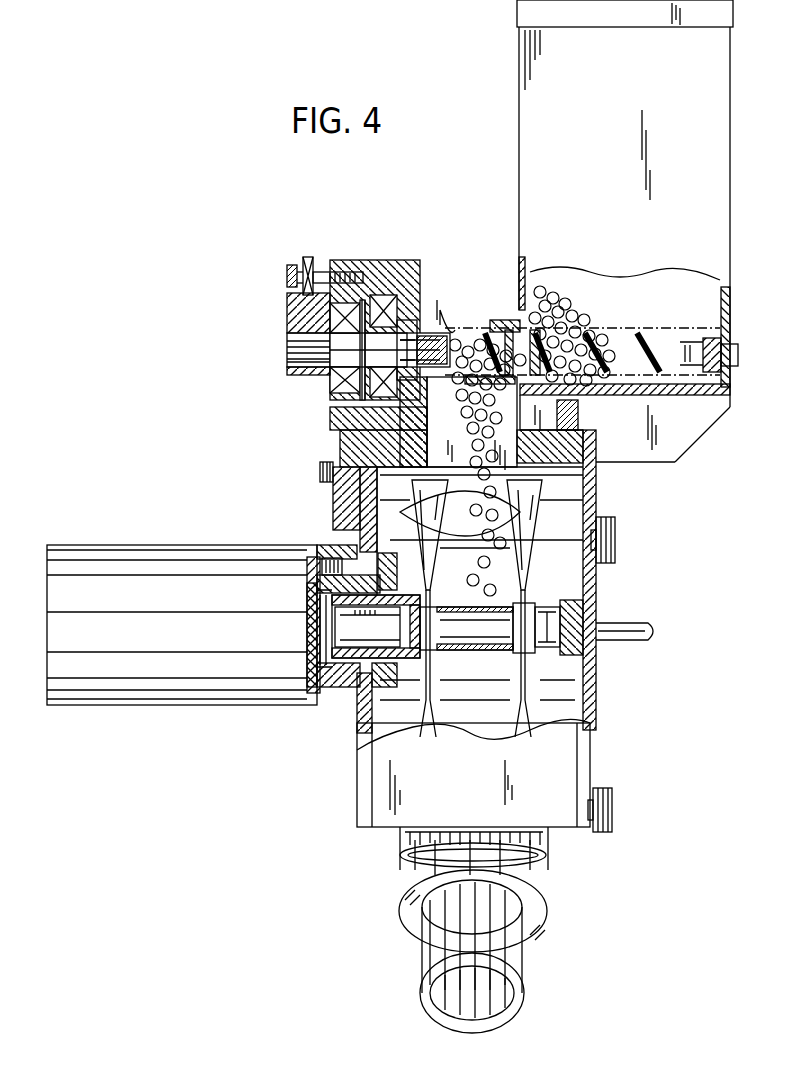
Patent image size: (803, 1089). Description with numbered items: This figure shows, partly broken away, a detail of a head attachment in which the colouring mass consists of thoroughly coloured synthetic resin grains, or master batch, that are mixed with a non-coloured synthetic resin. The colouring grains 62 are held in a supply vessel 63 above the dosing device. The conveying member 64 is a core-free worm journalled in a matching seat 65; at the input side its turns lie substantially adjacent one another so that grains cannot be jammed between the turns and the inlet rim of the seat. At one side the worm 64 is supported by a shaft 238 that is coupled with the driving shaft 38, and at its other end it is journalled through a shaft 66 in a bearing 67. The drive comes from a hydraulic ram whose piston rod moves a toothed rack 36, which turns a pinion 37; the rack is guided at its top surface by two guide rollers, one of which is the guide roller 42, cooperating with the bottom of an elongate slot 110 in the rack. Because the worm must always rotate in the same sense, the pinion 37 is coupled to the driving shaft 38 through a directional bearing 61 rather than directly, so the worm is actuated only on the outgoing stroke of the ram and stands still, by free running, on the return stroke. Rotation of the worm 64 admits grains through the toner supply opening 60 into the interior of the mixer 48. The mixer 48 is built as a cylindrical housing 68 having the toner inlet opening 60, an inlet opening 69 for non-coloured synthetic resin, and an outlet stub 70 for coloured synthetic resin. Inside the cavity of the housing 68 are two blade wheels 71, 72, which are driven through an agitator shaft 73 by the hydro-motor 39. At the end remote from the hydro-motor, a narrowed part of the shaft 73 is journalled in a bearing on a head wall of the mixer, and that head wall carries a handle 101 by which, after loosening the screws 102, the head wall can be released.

The toothed rack 36 is at (290, 320).
The pinion 37 is at (298, 372).
The driving shaft 38 is at (350, 300).
The hydro-motor 39 is at (115, 548).
The guide roller 42 is at (310, 270).
The mixer 48 is at (600, 490).
The toner supply opening 60 is at (430, 412).
The directional bearing 61 is at (293, 348).
The colouring grains 62 is at (552, 283).
The supply vessel 63 is at (712, 226).
The conveying member 64 is at (490, 340).
The seat 65 is at (505, 322).
The shaft 66 is at (694, 372).
The bearing 67 is at (714, 312).
The cylindrical housing 68 is at (596, 696).
The inlet opening 69 is at (455, 512).
The outlet stub 70 is at (490, 948).
The blade wheel 71 is at (428, 725).
The blade wheel 72 is at (528, 725).
The agitator shaft 73 is at (497, 605).
The handle 101 is at (628, 633).
The screws 102 is at (620, 540).
The elongate slot 110 is at (292, 300).
The shaft 238 is at (345, 378).